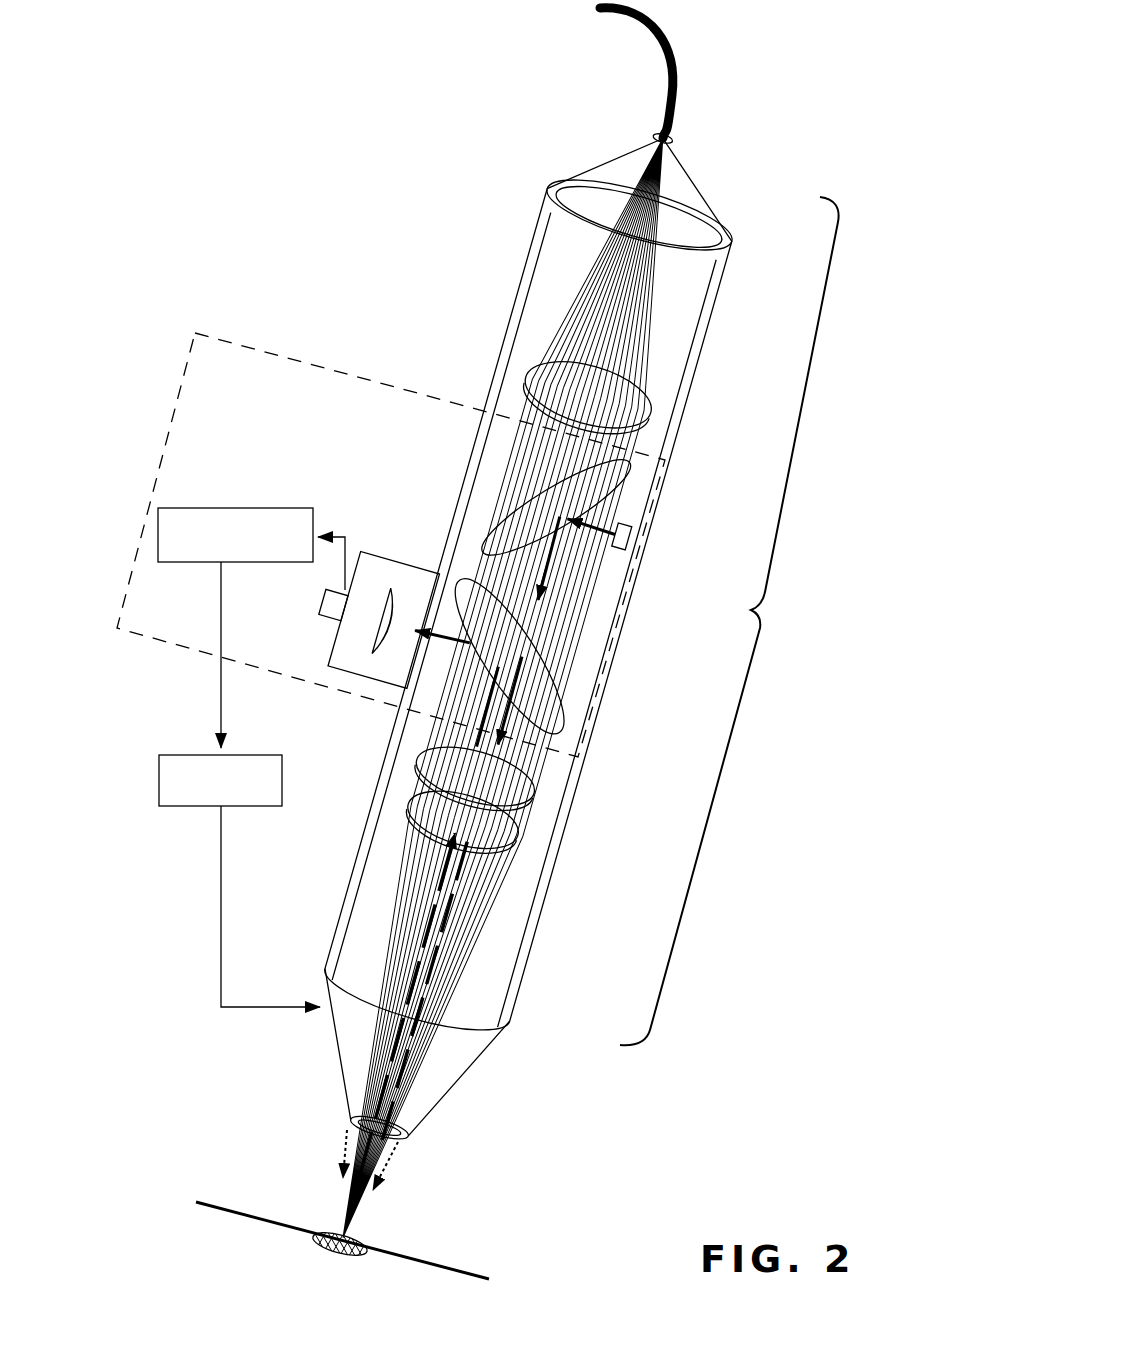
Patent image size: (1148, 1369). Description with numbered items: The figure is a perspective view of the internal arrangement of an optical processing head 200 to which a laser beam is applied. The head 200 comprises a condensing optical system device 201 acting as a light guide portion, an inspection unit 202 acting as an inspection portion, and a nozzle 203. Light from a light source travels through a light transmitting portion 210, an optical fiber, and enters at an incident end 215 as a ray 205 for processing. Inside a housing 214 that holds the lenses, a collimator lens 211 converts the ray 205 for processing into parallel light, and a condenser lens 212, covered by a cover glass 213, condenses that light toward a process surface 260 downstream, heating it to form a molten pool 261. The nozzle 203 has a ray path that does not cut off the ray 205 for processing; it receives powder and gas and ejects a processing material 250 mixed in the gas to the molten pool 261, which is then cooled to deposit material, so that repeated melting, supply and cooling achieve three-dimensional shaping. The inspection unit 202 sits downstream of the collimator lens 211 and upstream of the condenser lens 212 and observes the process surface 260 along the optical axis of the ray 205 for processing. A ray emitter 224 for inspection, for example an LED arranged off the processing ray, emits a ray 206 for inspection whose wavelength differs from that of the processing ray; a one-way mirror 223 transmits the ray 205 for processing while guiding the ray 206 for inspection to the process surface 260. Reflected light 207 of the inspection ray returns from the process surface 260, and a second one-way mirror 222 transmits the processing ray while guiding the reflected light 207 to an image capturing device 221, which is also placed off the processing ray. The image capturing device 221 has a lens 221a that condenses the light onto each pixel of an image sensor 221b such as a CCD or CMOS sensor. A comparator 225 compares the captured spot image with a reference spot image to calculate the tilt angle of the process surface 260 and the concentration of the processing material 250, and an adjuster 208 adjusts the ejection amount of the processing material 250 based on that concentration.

The optical processing head 200 is at (348, 84).
The condensing optical system device 201 is at (729, 621).
The inspection unit 202 is at (203, 345).
The nozzle 203 is at (450, 1078).
The ray for processing 205 is at (585, 308).
The ray for inspection 206 is at (530, 910).
The reflected light 207 is at (442, 872).
The adjuster 208 is at (185, 758).
The light transmitting portion 210 is at (643, 25).
The collimator lens 211 is at (650, 408).
The condenser lens 212 is at (540, 797).
The cover glass 213 is at (525, 835).
The housing 214 is at (690, 358).
The incident end 215 is at (670, 140).
The image capturing device 221 is at (405, 565).
The lens 221a is at (372, 648).
The image sensor 221b is at (325, 603).
The one-way mirror 222 is at (462, 580).
The one-way mirror 223 is at (485, 545).
The ray emitter for inspection 224 is at (635, 550).
The comparator 225 is at (226, 508).
The processing material 250 is at (375, 1193).
The process surface 260 is at (221, 1205).
The molten pool 261 is at (319, 1244).